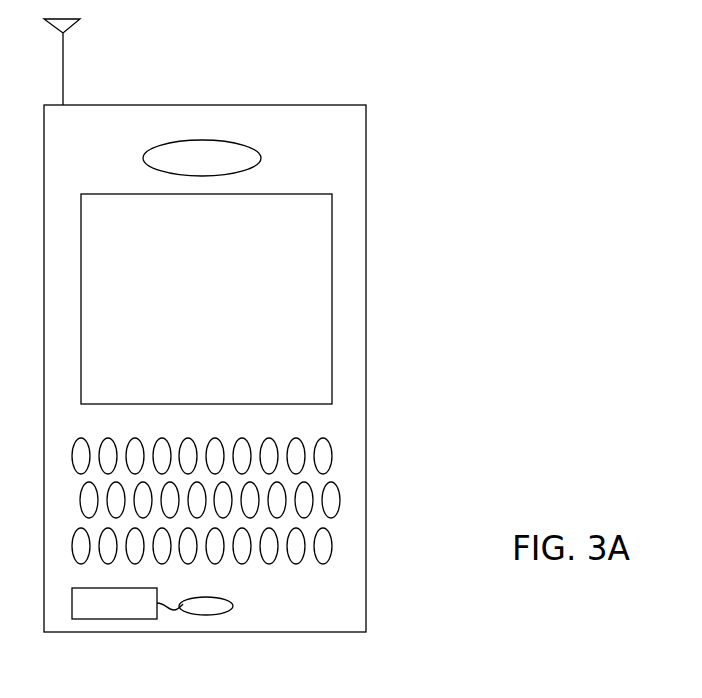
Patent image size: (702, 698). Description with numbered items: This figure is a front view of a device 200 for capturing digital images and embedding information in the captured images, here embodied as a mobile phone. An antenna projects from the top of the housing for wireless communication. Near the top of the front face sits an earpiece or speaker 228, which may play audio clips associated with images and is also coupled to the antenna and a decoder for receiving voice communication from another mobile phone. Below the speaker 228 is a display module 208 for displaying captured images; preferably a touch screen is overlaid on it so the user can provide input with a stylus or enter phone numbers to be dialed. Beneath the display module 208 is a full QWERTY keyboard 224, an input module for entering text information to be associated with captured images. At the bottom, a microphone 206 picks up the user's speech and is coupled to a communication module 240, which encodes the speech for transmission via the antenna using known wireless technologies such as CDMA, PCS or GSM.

The device 200 is at (366, 213).
The microphone 206 is at (212, 598).
The display module 208 is at (332, 273).
The QWERTY keyboard 224 is at (350, 503).
The speaker 228 is at (207, 140).
The communication module 240 is at (114, 603).